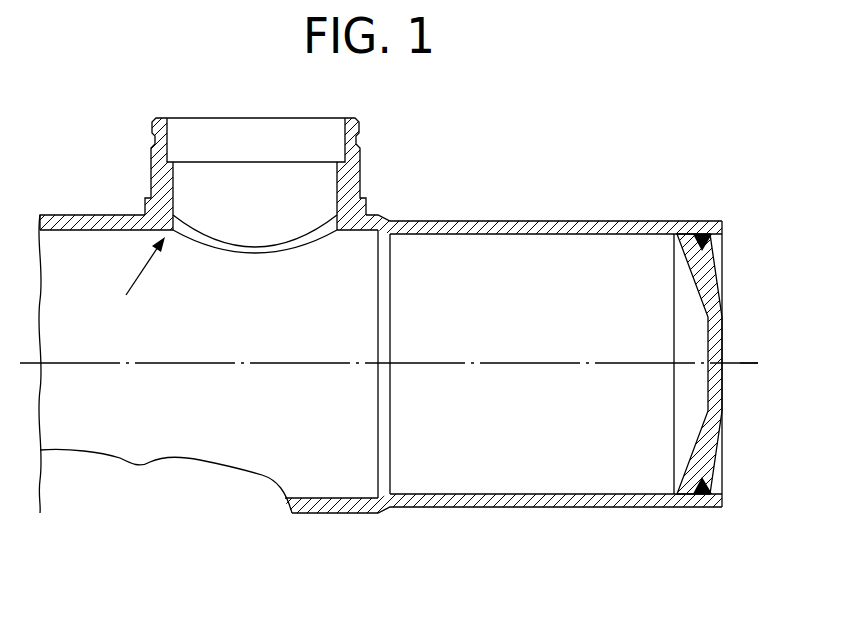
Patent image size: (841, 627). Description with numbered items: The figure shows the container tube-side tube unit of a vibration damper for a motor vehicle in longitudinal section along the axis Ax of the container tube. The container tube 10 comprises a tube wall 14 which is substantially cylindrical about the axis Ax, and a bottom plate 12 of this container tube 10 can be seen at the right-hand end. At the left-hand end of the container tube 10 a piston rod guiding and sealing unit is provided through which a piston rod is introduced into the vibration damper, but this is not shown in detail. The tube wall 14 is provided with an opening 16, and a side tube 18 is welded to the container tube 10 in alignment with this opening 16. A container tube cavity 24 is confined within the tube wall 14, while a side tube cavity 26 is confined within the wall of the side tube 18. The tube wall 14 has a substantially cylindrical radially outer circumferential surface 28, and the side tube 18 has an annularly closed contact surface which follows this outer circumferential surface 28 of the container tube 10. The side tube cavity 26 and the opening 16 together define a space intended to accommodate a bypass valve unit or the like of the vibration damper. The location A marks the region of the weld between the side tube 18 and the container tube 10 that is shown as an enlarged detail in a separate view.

The container tube 10 is at (380, 345).
The bottom plate 12 is at (712, 441).
The tube wall 14 is at (485, 508).
The opening 16 is at (273, 251).
The side tube 18 is at (368, 184).
The container tube cavity 24 is at (545, 333).
The side tube cavity 26 is at (247, 208).
The radially outer circumferential surface 28 is at (546, 221).
The location A is at (134, 266).
The axis Ax is at (747, 366).